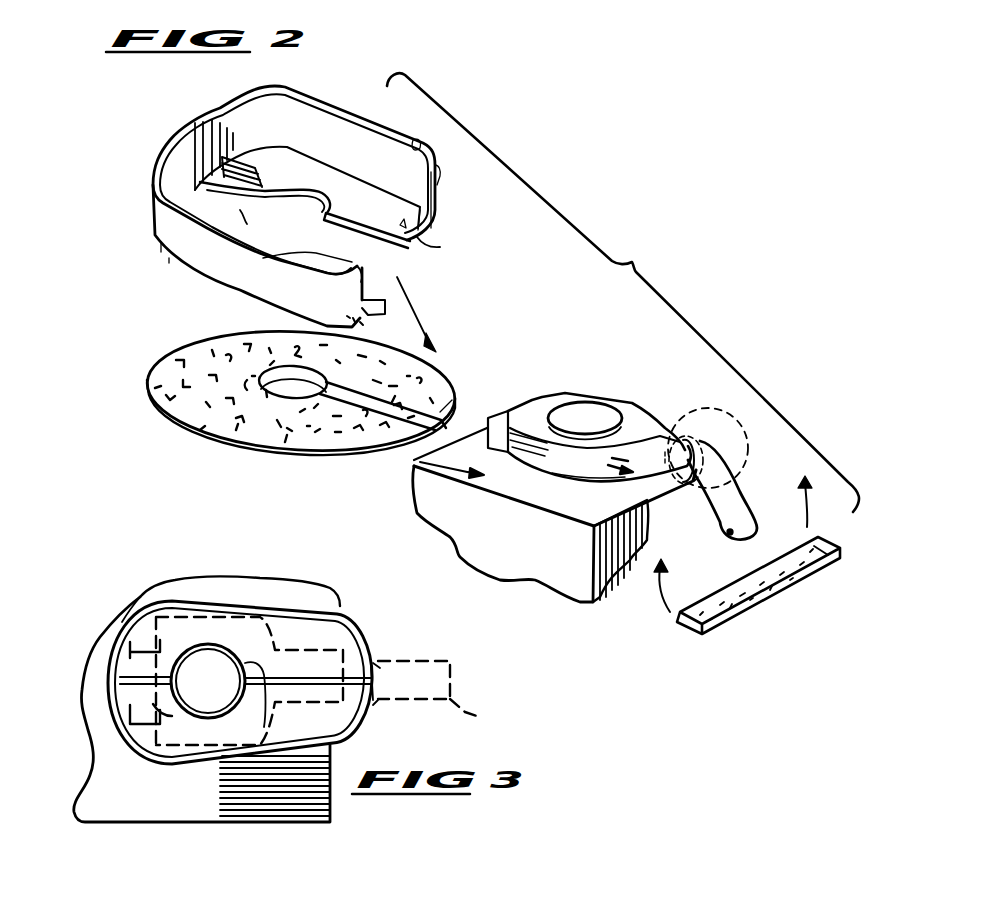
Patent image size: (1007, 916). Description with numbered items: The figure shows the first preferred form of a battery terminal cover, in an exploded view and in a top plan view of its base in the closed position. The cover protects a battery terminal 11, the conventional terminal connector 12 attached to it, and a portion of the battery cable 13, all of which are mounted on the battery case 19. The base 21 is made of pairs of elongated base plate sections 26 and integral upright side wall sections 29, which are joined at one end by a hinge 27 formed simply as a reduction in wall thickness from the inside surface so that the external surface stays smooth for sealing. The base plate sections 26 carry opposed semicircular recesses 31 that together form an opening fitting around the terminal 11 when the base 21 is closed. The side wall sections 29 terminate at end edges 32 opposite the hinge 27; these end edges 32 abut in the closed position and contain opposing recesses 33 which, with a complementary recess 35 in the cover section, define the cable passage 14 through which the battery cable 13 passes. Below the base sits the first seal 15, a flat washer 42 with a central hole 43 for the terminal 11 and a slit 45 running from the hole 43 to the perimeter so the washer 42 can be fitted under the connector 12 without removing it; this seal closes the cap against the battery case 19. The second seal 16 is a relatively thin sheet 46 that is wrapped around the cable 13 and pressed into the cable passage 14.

In FIG. 2, the battery terminal 11 is at (598, 412).
In FIG. 3, the battery terminal 11 is at (203, 668).
In FIG. 2, the terminal connector 12 is at (645, 420).
In FIG. 3, the terminal connector 12 is at (245, 598).
In FIG. 2, the battery cable 13 is at (740, 492).
In FIG. 3, the battery cable 13 is at (478, 716).
In FIG. 3, the cable passage 14 is at (380, 660).
In FIG. 2, the first seal 15 is at (448, 407).
In FIG. 2, the second seal 16 is at (742, 432).
In FIG. 2, the battery case 19 is at (444, 541).
In FIG. 3, the battery case 19 is at (324, 590).
In FIG. 2, the base 21 is at (340, 100).
In FIG. 3, the base 21 is at (288, 592).
In FIG. 2, the base plate sections 26 is at (309, 262).
In FIG. 3, the base plate sections 26 is at (148, 606).
In FIG. 2, the hinge 27 is at (210, 118).
In FIG. 3, the hinge 27 is at (78, 702).
In FIG. 2, the side wall sections 29 is at (415, 136).
In FIG. 3, the side wall sections 29 is at (354, 626).
In FIG. 2, the semicircular recesses 31 is at (290, 252).
In FIG. 2, the end edges 32 is at (420, 242).
In FIG. 3, the end edges 32 is at (378, 663).
In FIG. 2, the recesses 33 is at (436, 176).
In FIG. 3, the recess 35 is at (377, 682).
In FIG. 2, the flat washer 42 is at (168, 347).
In FIG. 2, the central hole 43 is at (283, 416).
In FIG. 2, the slit 45 is at (395, 455).
In FIG. 2, the thin sheet 46 is at (820, 560).